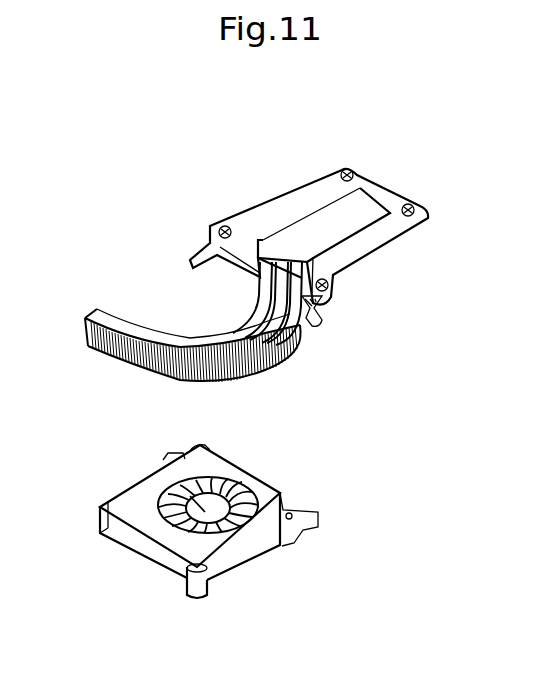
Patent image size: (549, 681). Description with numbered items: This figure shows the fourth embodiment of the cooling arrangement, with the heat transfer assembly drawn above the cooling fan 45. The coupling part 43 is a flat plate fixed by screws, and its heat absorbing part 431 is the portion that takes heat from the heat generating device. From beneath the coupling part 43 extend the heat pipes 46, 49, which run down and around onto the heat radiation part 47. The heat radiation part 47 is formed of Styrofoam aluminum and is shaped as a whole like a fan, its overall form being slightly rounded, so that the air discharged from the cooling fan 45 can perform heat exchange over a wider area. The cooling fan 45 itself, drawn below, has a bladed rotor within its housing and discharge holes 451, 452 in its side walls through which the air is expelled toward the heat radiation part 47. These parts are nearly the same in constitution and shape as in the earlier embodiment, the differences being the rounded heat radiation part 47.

The coupling part 43 is at (292, 208).
The heat absorbing part 431 is at (357, 207).
The cooling fan 45 is at (202, 505).
The discharge hole 451 is at (143, 543).
The discharge hole 452 is at (237, 560).
The heat pipe 46 is at (102, 315).
The heat radiation part 47 is at (236, 383).
The heat pipe 49 is at (320, 304).